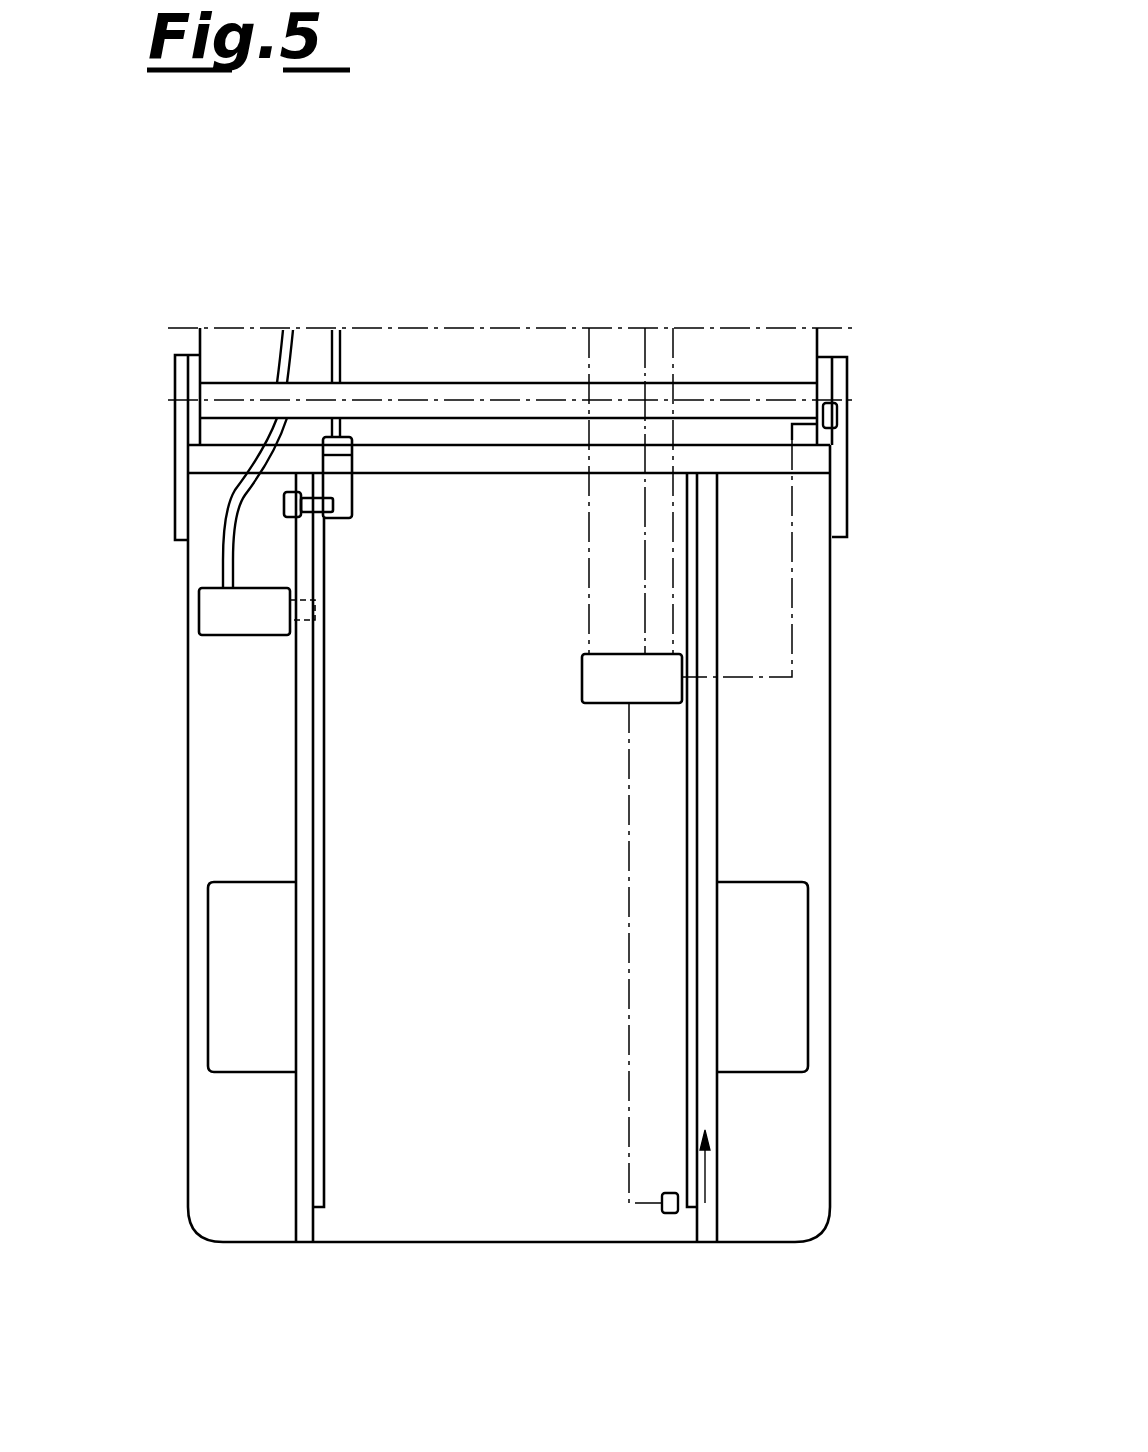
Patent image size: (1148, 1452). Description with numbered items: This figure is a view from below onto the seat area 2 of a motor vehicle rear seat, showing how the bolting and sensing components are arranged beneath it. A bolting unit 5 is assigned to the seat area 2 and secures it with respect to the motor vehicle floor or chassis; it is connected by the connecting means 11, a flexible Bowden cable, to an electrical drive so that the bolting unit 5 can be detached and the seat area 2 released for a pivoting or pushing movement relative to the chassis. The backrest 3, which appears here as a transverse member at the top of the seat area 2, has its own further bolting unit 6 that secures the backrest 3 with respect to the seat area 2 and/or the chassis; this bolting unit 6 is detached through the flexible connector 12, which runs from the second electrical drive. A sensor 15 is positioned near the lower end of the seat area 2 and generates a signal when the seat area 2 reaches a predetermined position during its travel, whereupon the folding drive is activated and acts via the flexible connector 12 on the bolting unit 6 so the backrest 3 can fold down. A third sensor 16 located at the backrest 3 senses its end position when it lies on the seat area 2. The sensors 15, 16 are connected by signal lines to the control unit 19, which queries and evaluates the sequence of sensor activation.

The seat area 2 is at (175, 1195).
The backrest 3 is at (737, 330).
The bolting unit 5 is at (233, 625).
The bolting unit 6 is at (353, 527).
The connecting means 11 is at (290, 345).
The flexible connector 12 is at (340, 345).
The sensor 15 is at (668, 1213).
The third sensor 16 is at (847, 424).
The control unit 19 is at (650, 696).